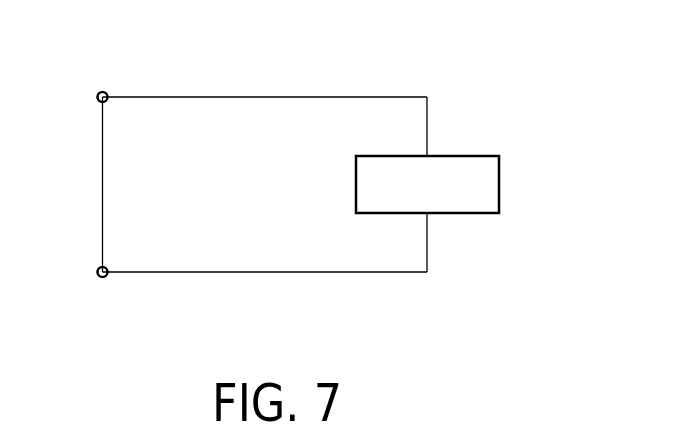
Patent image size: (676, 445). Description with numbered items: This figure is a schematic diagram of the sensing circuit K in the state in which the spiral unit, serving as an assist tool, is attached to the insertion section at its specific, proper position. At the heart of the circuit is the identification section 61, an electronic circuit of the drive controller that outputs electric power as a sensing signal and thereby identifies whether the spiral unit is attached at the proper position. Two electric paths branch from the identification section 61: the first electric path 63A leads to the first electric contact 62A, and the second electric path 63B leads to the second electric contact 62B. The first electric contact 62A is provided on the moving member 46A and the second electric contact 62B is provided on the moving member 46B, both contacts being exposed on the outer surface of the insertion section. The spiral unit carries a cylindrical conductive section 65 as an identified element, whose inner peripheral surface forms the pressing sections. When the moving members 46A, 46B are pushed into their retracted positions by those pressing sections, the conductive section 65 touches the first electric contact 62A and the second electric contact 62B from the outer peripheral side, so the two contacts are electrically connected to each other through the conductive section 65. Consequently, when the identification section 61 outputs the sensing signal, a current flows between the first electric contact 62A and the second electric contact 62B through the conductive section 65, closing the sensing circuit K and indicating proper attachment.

The sensing circuit K is at (421, 48).
The identification section 61 is at (470, 156).
The first electric contact 62A is at (103, 92).
The moving member 46A is at (105, 70).
The second electric contact 62B is at (103, 277).
The moving member 46B is at (104, 315).
The first electric path 63A is at (272, 97).
The second electric path 63B is at (273, 273).
The conductive section 65 is at (102, 185).